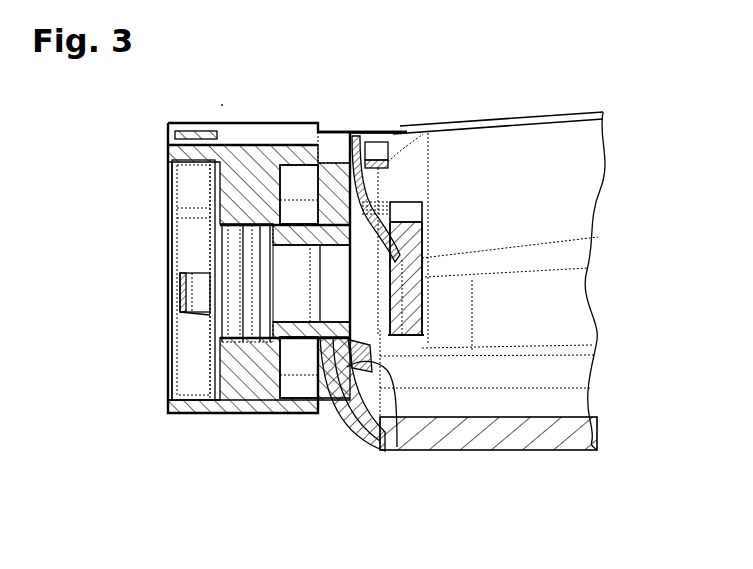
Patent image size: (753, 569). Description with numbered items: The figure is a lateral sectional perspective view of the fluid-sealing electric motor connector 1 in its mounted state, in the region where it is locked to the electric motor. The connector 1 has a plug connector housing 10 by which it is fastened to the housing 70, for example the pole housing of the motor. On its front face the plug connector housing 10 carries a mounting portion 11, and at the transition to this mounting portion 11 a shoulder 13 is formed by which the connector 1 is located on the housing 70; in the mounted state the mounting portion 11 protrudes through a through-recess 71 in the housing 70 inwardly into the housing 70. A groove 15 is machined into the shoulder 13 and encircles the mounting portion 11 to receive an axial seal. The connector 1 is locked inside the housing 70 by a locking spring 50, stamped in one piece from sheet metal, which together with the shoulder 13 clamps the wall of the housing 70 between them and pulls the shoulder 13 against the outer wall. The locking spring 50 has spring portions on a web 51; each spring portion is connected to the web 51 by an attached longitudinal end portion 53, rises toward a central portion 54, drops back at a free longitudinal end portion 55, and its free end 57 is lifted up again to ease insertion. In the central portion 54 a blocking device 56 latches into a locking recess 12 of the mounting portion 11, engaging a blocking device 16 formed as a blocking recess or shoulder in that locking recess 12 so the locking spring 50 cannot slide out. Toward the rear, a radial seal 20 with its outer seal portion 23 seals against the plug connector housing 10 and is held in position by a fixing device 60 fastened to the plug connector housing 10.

The electric motor connector 1 is at (222, 96).
The plug connector housing 10 is at (266, 128).
The mounting portion 11 is at (430, 235).
The locking recess 12 is at (370, 294).
The shoulder 13 is at (302, 180).
The groove 15 is at (320, 157).
The blocking device 16 is at (440, 278).
The radial seal 20 is at (237, 322).
The outer seal portion 23 is at (268, 330).
The locking spring 50 is at (399, 129).
The web 51 is at (380, 160).
The attached longitudinal end portion 53 is at (362, 188).
The central portion 54 is at (428, 255).
The free longitudinal end portion 55 is at (388, 388).
The blocking device 56 is at (412, 337).
The free end 57 is at (350, 392).
The fixing device 60 is at (193, 246).
The housing 70 is at (567, 218).
The through-recess 71 is at (350, 405).